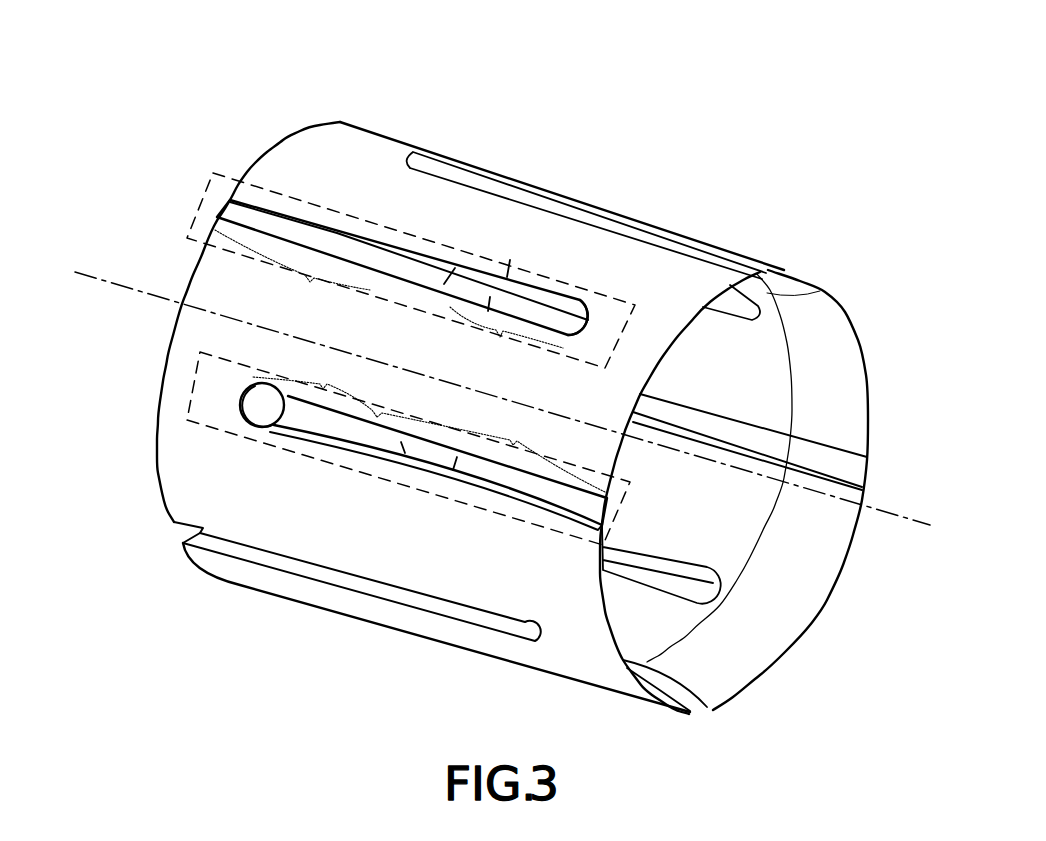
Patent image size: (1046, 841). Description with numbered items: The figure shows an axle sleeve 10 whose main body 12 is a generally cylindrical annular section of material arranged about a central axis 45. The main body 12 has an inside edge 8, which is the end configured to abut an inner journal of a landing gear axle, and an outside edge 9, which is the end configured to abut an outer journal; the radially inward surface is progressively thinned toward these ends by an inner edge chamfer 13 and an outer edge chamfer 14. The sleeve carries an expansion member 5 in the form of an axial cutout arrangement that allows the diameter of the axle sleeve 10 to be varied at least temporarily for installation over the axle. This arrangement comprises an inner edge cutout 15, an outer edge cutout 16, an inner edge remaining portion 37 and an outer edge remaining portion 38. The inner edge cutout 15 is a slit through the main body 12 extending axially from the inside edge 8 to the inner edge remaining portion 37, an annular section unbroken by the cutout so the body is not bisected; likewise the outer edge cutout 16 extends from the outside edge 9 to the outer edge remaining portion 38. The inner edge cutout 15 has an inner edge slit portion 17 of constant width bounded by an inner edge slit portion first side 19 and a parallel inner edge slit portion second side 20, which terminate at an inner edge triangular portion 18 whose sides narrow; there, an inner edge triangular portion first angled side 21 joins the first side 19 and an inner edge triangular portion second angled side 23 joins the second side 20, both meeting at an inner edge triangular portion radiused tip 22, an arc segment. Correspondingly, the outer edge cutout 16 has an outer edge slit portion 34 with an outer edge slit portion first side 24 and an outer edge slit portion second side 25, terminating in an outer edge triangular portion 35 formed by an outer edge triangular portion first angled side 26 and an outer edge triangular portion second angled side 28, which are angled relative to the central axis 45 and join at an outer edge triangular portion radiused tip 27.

The expansion member 5 is at (122, 167).
The inside edge 8 is at (347, 122).
The outside edge 9 is at (786, 272).
The axle sleeve 10 is at (547, 97).
The main body 12 is at (315, 150).
The inner edge chamfer 13 is at (427, 453).
The outer edge chamfer 14 is at (843, 353).
The inner edge cutout 15 is at (213, 177).
The outer edge cutout 16 is at (207, 355).
The inner edge slit portion 17 is at (292, 270).
The inner edge triangular portion 18 is at (506, 339).
The inner edge slit portion first side 19 is at (337, 237).
The inner edge slit portion second side 20 is at (360, 263).
The inner edge triangular portion first angled side 21 is at (490, 283).
The inner edge triangular portion radiused tip 22 is at (598, 314).
The inner edge triangular portion second angled side 23 is at (520, 323).
The outer edge slit portion first side 24 is at (437, 445).
The outer edge slit portion second side 25 is at (460, 470).
The outer edge triangular portion first angled side 26 is at (283, 383).
The outer edge triangular portion radiused tip 27 is at (237, 402).
The outer edge triangular portion second angled side 28 is at (273, 430).
The outer edge slit portion 34 is at (492, 452).
The outer edge triangular portion 35 is at (315, 386).
The inner edge remaining portion 37 is at (640, 360).
The outer edge remaining portion 38 is at (175, 443).
The central axis 45 is at (900, 518).